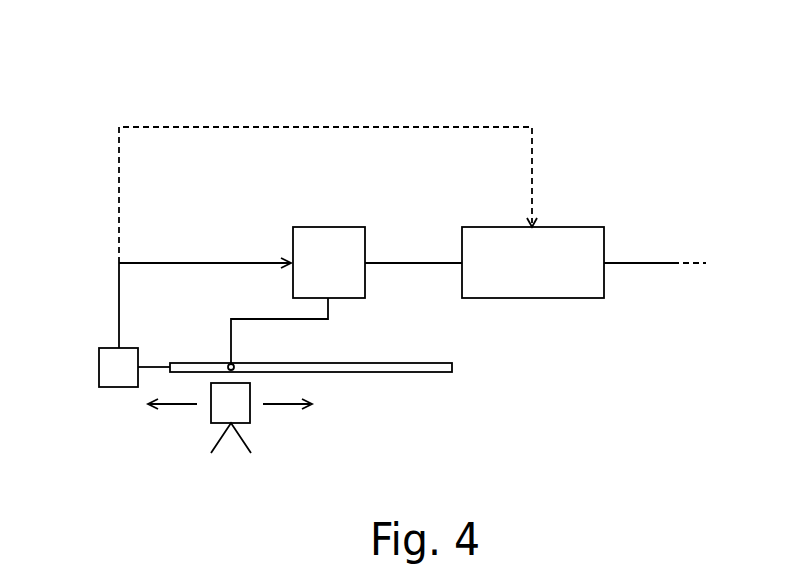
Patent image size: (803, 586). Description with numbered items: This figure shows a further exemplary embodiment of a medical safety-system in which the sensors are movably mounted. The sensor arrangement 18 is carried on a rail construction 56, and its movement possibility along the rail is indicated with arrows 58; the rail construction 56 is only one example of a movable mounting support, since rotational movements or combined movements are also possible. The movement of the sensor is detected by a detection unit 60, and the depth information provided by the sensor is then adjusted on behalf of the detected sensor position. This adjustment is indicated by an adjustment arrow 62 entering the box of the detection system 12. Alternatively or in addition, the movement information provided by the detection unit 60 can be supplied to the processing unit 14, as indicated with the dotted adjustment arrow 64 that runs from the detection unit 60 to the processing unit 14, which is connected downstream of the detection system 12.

The detection system 12 is at (330, 227).
The processing unit 14 is at (572, 227).
The sensor arrangement 18 is at (222, 405).
The rail construction 56 is at (452, 370).
The arrows 58 is at (288, 405).
The detection unit 60 is at (110, 365).
The adjustment arrow 62 is at (162, 263).
The dotted adjustment arrow 64 is at (227, 127).